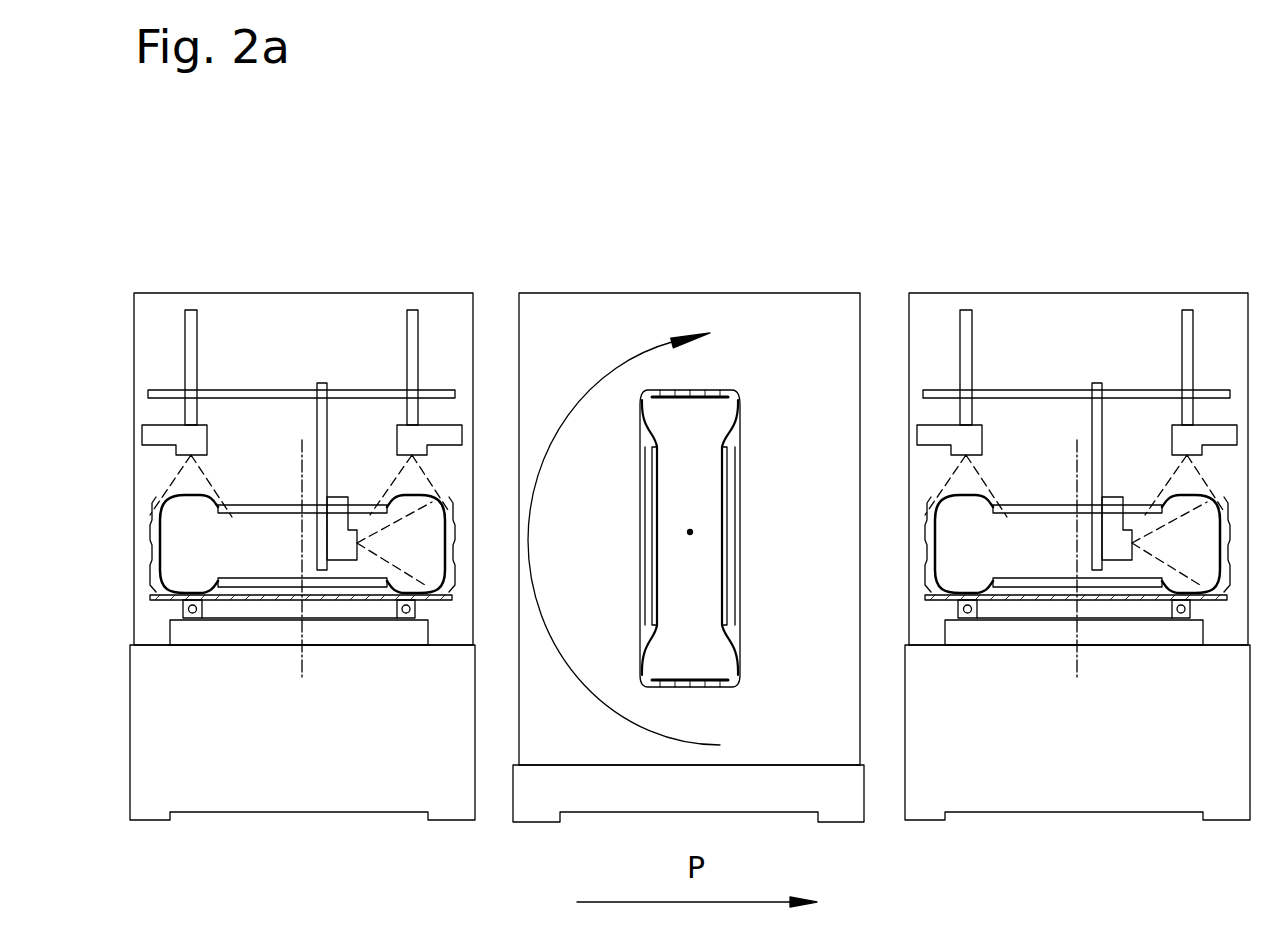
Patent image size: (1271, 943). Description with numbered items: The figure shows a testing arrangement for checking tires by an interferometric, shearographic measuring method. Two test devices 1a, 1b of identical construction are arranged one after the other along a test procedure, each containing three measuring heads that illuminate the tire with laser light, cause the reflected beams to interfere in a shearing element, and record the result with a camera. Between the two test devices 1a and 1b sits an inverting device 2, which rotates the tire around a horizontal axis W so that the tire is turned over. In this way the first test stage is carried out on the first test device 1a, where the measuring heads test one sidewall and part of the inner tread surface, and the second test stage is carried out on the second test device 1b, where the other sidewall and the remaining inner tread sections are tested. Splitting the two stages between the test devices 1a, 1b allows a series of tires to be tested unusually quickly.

The first test device 1a is at (307, 262).
The second test device 1b is at (1087, 262).
The inverting device 2 is at (711, 262).
The axis W is at (690, 532).